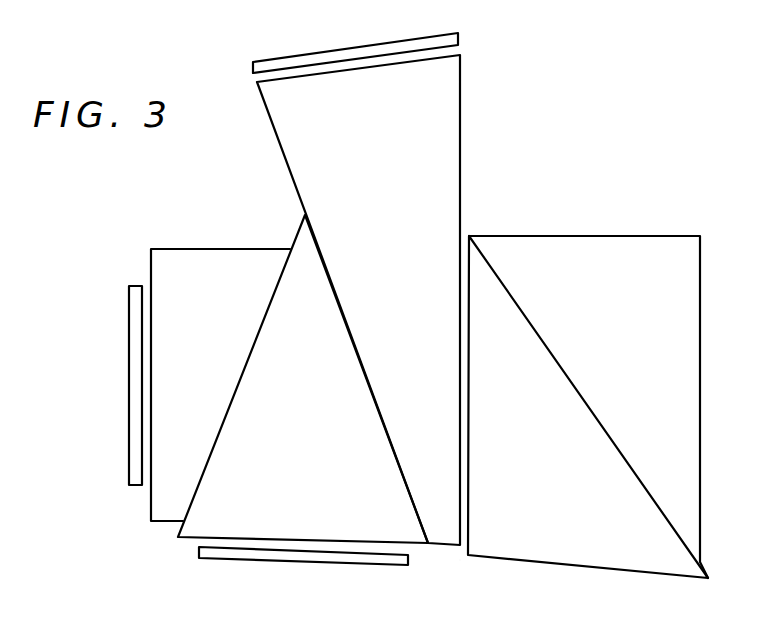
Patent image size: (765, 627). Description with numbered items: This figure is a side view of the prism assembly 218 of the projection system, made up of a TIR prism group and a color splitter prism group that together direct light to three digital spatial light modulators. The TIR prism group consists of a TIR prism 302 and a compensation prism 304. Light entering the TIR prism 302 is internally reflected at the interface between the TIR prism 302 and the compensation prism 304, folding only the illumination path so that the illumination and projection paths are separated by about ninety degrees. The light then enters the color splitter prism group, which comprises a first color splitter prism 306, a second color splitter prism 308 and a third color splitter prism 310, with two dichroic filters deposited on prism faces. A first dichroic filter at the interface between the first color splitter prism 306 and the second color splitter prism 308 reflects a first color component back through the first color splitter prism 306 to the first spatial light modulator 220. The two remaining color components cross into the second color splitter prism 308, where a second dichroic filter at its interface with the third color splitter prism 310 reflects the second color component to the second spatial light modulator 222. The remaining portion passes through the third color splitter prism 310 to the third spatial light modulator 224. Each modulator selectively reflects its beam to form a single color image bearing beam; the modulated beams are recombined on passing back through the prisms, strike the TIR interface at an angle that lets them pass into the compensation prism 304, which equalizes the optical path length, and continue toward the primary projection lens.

The color correction filter 218 is at (548, 141).
The first spatial light modulator 220 is at (313, 53).
The second spatial light modulator 222 is at (265, 562).
The third spatial light modulator 224 is at (129, 392).
The TIR prism 302 is at (568, 501).
The compensation prism 304 is at (638, 321).
The first color splitter prism 306 is at (398, 189).
The second color splitter prism 308 is at (328, 447).
The third color splitter prism 310 is at (200, 249).